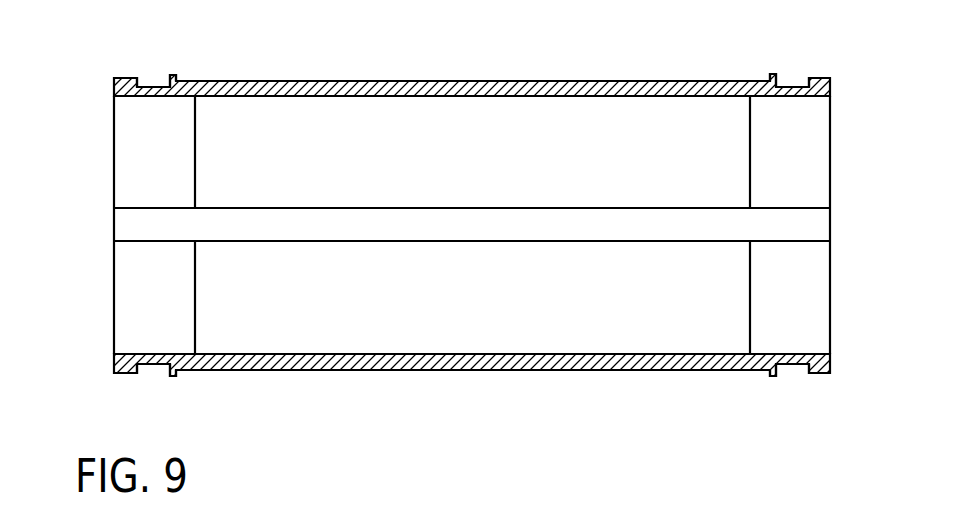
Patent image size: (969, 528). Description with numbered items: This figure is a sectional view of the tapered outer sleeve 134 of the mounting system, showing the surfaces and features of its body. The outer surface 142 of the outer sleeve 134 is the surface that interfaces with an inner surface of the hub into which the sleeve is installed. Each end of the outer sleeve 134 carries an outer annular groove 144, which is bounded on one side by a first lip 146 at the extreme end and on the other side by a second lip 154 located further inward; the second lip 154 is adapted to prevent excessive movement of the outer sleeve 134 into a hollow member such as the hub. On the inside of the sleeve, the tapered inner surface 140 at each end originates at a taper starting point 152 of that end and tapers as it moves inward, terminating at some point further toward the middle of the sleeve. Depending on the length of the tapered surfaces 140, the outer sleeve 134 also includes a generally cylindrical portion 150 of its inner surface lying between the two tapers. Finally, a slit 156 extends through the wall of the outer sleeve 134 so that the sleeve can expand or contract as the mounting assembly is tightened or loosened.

The outer sleeve 134 is at (258, 388).
The tapered inner surface 140 is at (309, 97).
The outer surface 142 is at (611, 81).
The outer annular groove 144 is at (152, 87).
The first lip 146 is at (113, 81).
The generally cylindrical portion 150 is at (525, 97).
The taper starting point 152 is at (197, 130).
The second lip 154 is at (177, 76).
The slit 156 is at (130, 228).